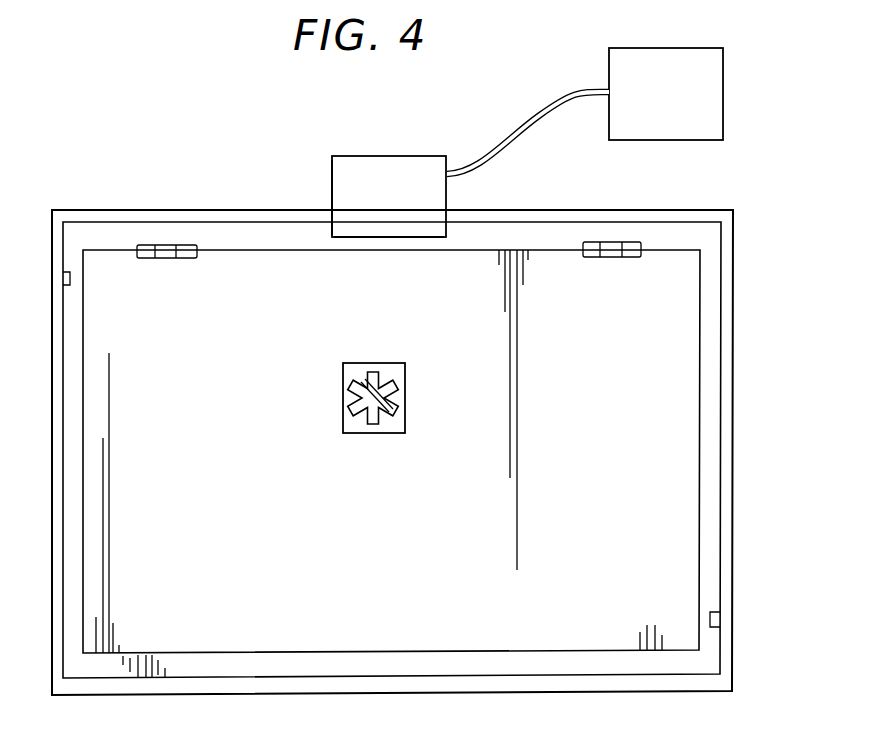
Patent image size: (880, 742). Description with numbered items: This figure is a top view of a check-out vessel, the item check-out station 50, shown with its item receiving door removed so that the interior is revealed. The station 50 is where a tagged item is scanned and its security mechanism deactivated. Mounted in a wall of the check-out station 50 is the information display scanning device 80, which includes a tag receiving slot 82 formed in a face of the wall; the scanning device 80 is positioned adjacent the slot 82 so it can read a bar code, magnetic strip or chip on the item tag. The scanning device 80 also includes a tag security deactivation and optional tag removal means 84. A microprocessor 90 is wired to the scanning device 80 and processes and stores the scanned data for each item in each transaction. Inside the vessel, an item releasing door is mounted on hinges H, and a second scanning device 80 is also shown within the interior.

The item check-out station 50 is at (166, 97).
The scanning device 80 is at (358, 155).
The tag receiving slot 82 is at (392, 237).
The tag security deactivation and tag apparatus removal means 84 is at (332, 173).
The microprocessor 90 is at (677, 101).
The hinges H is at (163, 258).